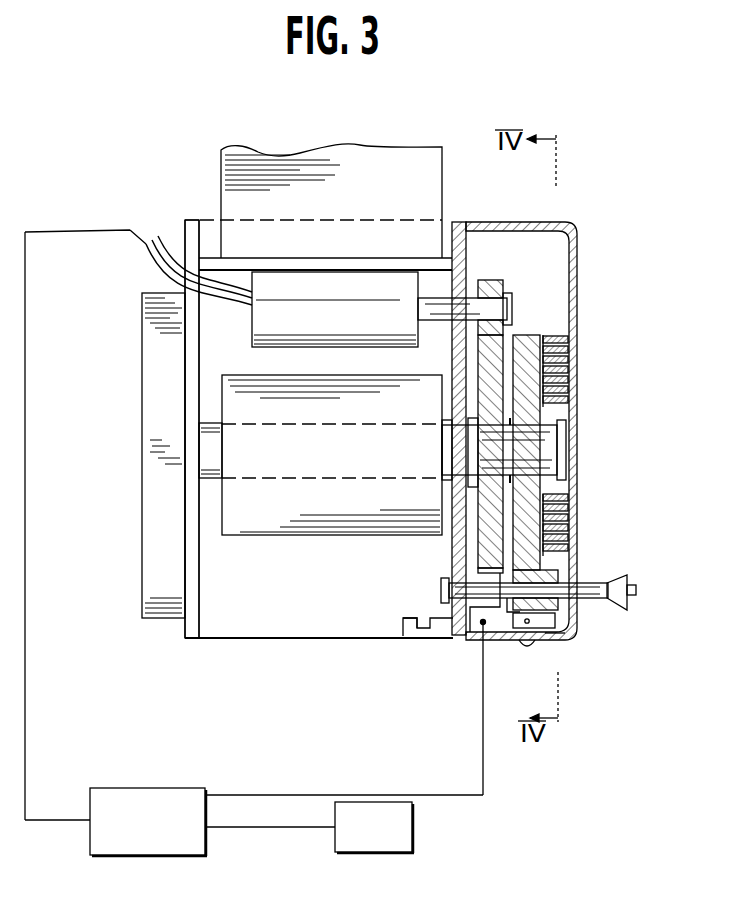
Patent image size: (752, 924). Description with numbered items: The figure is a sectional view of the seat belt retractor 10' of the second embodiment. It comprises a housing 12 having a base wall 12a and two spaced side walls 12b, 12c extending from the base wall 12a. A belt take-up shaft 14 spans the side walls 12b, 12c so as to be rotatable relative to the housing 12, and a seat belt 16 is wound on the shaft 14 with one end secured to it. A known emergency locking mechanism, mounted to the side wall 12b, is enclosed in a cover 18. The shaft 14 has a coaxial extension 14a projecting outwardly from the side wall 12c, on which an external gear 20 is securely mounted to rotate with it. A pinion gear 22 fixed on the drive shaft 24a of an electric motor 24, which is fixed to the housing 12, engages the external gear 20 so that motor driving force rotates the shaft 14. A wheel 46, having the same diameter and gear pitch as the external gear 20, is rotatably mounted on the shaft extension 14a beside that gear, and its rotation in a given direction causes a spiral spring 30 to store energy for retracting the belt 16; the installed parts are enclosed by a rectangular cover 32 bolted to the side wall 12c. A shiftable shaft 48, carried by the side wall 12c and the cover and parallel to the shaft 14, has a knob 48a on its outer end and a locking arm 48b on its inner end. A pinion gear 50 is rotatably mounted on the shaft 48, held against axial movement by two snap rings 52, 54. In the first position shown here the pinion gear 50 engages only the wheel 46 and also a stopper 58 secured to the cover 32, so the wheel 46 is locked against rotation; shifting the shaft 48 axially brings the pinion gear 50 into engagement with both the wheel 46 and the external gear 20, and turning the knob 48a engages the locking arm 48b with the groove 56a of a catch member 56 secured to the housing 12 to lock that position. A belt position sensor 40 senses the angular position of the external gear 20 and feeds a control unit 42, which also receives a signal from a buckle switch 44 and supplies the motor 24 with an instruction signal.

The seat belt retractor 10' is at (340, 741).
The housing 12 is at (301, 640).
The base wall 12a is at (243, 626).
The side wall 12b is at (190, 228).
The side wall 12c is at (458, 236).
The belt take-up shaft 14 is at (328, 482).
The shaft extension 14a is at (542, 452).
The seat belt 16 is at (418, 165).
The cover 18 is at (162, 622).
The external gear 20 is at (490, 545).
The pinion gear 22 is at (500, 292).
The electric motor 24 is at (335, 330).
The drive shaft 24a is at (468, 312).
The spiral spring 30 is at (556, 396).
The rectangular cover 32 is at (577, 320).
The belt position sensor 40 is at (481, 630).
The control unit 42 is at (167, 858).
The buckle switch 44 is at (370, 855).
The wheel 46 is at (556, 523).
The shiftable shaft 48 is at (592, 598).
The knob 48a is at (637, 592).
The locking arm 48b is at (441, 592).
The pinion gear 50 is at (515, 643).
The snap ring 52 is at (578, 612).
The snap ring 54 is at (510, 608).
The catch member 56 is at (438, 620).
The groove 56a is at (404, 624).
The stopper 58 is at (567, 640).